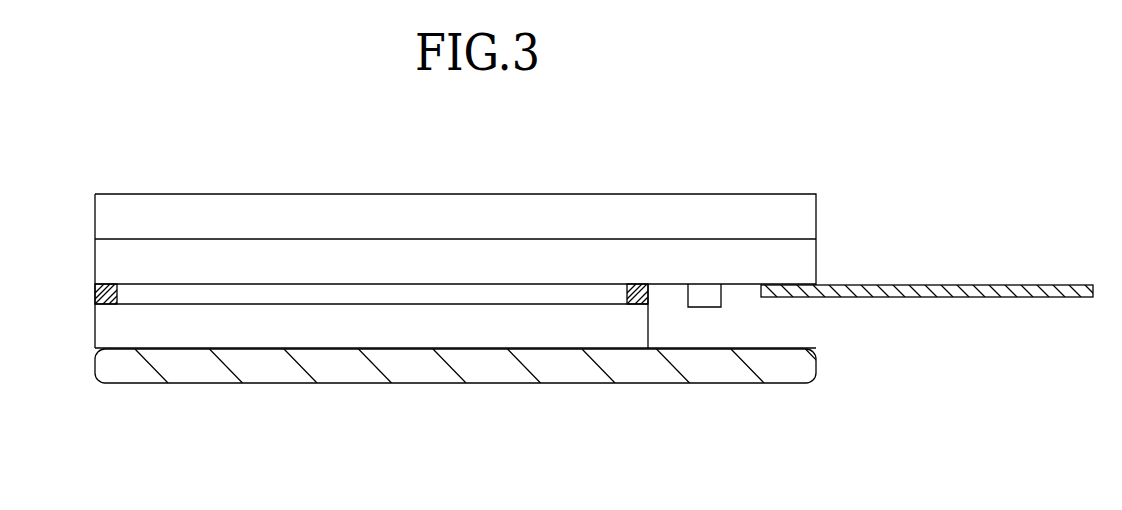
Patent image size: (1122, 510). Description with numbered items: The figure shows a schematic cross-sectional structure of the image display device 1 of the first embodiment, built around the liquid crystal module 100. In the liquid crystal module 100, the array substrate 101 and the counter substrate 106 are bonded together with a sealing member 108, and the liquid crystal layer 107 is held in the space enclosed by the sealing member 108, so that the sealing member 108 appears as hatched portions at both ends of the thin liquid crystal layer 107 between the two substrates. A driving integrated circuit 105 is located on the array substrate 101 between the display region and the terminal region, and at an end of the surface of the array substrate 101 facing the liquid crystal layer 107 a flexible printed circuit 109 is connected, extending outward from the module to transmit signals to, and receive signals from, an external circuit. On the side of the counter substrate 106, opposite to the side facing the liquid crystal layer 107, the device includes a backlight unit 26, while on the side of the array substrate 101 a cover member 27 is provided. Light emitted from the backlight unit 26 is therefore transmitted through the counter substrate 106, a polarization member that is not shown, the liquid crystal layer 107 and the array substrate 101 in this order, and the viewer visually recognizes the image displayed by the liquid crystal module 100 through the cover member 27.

The image display device 1 is at (763, 164).
The cover member 27 is at (103, 215).
The liquid crystal module 100 is at (92, 239).
The array substrate 101 is at (812, 260).
The driving integrated circuit 105 is at (720, 307).
The counter substrate 106 is at (645, 328).
The liquid crystal layer 107 is at (588, 290).
The sealing member 108 is at (112, 305).
The flexible printed circuit 109 is at (920, 294).
The backlight unit 26 is at (97, 367).